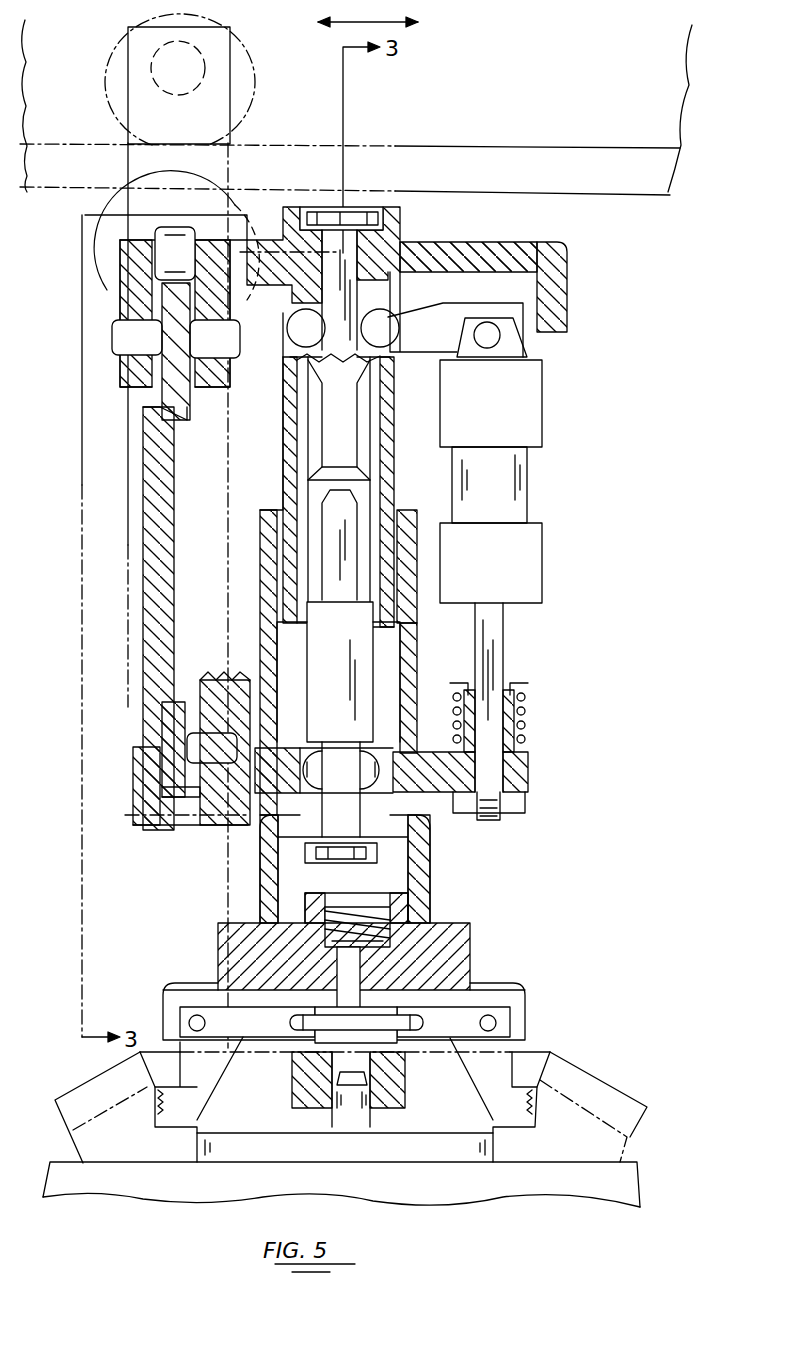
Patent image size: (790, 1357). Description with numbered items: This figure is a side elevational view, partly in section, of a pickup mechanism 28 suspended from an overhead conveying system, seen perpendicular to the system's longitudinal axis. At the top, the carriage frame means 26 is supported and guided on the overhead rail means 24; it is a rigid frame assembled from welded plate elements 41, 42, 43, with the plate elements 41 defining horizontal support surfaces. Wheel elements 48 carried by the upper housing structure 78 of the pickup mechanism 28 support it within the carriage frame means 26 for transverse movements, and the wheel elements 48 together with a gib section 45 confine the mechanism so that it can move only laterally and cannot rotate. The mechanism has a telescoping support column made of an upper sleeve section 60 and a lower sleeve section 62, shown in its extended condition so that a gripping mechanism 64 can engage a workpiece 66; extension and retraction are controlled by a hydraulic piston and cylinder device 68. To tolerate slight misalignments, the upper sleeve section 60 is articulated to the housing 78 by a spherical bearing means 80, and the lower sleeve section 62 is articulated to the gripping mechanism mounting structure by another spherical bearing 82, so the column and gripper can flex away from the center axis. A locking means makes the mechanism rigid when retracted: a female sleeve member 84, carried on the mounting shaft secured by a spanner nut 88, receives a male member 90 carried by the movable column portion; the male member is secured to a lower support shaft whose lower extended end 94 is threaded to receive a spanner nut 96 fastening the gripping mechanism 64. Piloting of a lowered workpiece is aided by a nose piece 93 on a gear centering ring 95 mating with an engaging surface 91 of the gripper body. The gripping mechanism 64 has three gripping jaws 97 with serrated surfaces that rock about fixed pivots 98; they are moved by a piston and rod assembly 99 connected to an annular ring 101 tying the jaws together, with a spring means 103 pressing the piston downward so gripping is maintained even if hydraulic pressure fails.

The overhead rail means 24 is at (594, 141).
The carriage frame means 26 is at (138, 447).
The pickup mechanism 28 is at (188, 945).
The plate element 41 is at (197, 420).
The plate element 42 is at (150, 558).
The plate element 43 is at (170, 725).
The gib section 45 is at (150, 795).
The wheel elements 48 is at (160, 233).
The upper sleeve section 60 is at (290, 426).
The lower sleeve section 62 is at (272, 563).
The gripping mechanism 64 is at (493, 992).
The workpiece 66 is at (615, 1103).
The hydraulic piston and cylinder device 68 is at (500, 482).
The upper housing structure 78 is at (225, 678).
The spherical bearing means 80 is at (380, 310).
The spherical bearing 82 is at (330, 832).
The female sleeve member 84 is at (365, 414).
The spanner nut 88 is at (357, 216).
The male member 90 is at (345, 511).
The mating engaging surface 91 is at (380, 1110).
The nose piece 93 is at (347, 1112).
The lower extended end 94 is at (330, 863).
The gear centering ring 95 is at (256, 1150).
The spanner nut 96 is at (378, 860).
The gripping jaws 97 is at (212, 1082).
The fixed pivots 98 is at (190, 1021).
The piston and rod assembly 99 is at (460, 940).
The annular ring 101 is at (298, 1017).
The spring means 103 is at (362, 923).